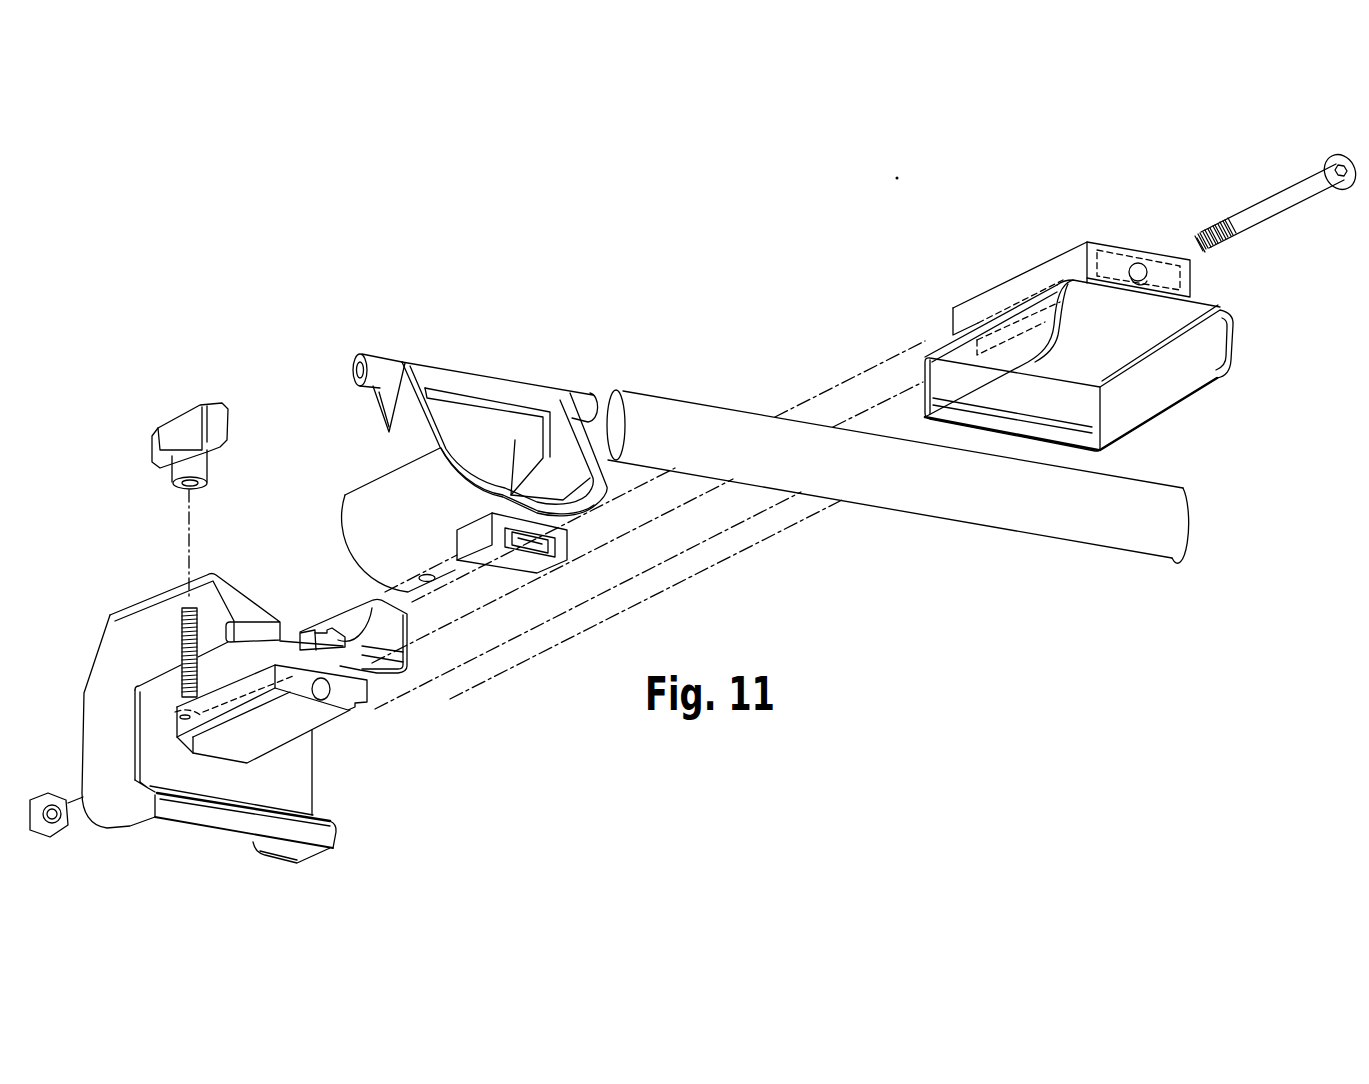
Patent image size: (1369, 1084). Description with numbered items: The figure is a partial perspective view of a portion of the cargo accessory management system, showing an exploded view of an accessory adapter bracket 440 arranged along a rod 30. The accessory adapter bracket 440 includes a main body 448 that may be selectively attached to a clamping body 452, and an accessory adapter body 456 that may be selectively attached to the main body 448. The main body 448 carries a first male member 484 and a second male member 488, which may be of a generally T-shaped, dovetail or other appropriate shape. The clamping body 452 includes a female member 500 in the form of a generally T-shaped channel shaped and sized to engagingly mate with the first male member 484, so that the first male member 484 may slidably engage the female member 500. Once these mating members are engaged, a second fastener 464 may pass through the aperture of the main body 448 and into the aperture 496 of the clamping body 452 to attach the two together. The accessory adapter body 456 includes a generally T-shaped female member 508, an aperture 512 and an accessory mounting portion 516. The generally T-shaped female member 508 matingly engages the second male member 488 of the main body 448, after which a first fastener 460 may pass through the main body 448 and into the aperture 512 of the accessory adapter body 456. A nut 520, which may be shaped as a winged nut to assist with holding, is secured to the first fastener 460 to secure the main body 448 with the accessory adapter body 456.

The rod 30 is at (938, 482).
The accessory adapter bracket 440 is at (138, 517).
The main body 448 is at (137, 648).
The clamping body 452 is at (950, 367).
The accessory adapter body 456 is at (400, 485).
The first fastener 460 is at (178, 622).
The second fastener 464 is at (1268, 207).
The first male member 484 is at (330, 702).
The second male member 488 is at (316, 630).
The aperture 496 is at (1141, 262).
The female member 500 is at (1000, 293).
The generally T-shaped female member 508 is at (548, 560).
The aperture 512 is at (428, 581).
The accessory mounting portion 516 is at (390, 363).
The nut 520 is at (193, 420).